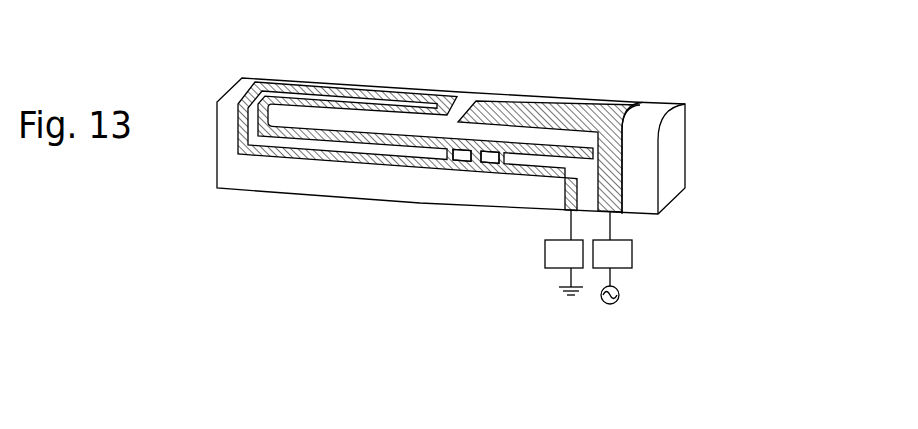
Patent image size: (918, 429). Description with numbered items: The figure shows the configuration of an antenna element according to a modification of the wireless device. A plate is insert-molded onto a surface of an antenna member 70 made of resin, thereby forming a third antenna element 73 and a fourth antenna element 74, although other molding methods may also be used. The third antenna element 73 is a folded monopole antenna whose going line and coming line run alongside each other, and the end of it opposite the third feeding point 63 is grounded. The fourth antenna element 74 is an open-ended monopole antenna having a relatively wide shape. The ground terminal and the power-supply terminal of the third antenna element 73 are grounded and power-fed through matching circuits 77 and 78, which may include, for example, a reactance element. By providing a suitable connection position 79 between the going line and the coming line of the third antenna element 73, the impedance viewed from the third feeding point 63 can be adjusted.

The antenna member 70 is at (685, 152).
The third antenna element 73 is at (345, 88).
The fourth antenna element 74 is at (565, 100).
The matching circuit 77 is at (545, 251).
The matching circuit 78 is at (632, 250).
The connection position 79 is at (512, 174).
The third feeding point 63 is at (619, 298).